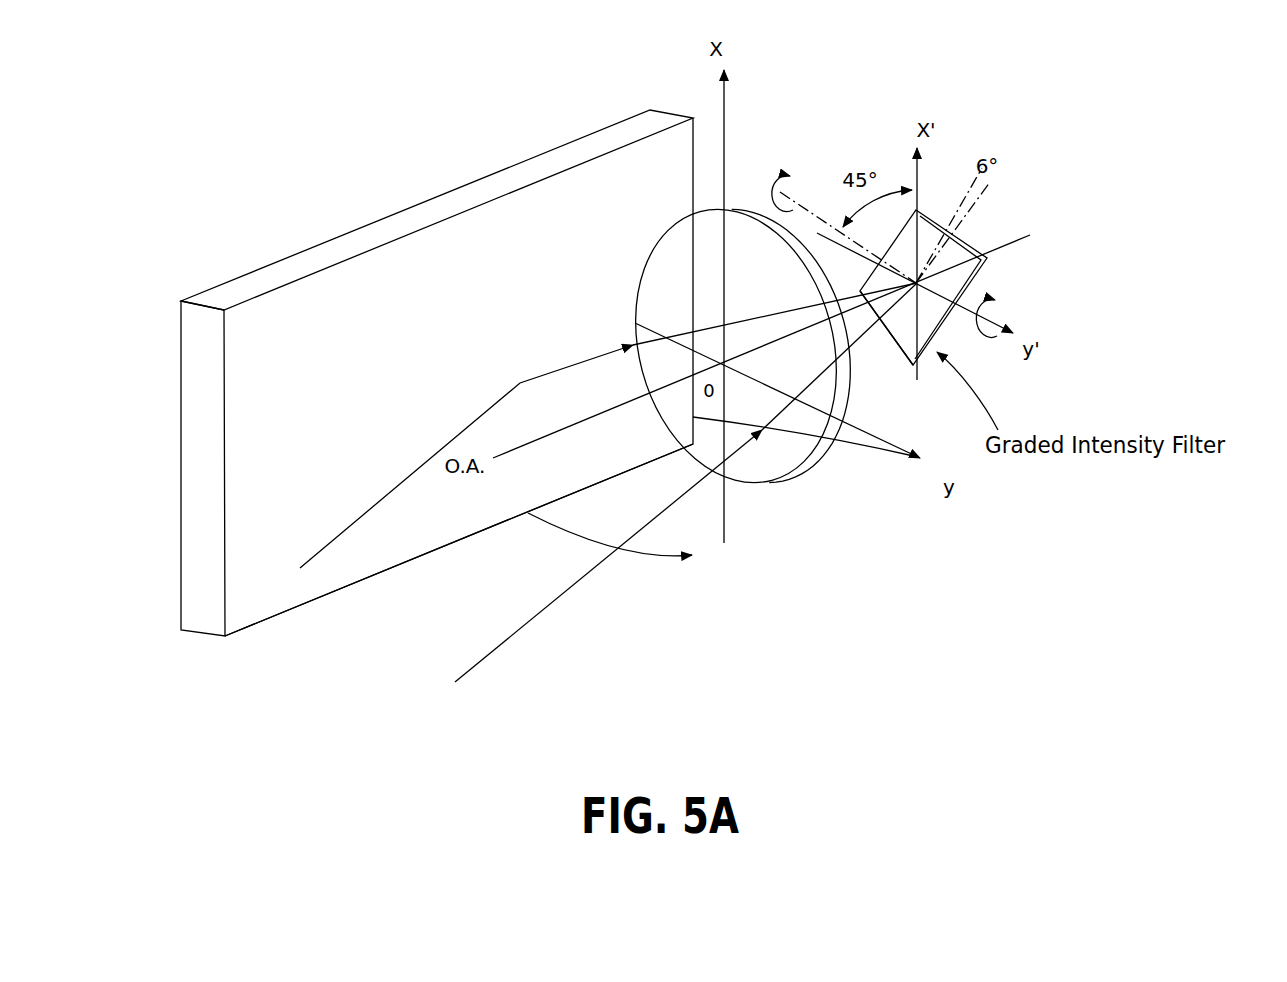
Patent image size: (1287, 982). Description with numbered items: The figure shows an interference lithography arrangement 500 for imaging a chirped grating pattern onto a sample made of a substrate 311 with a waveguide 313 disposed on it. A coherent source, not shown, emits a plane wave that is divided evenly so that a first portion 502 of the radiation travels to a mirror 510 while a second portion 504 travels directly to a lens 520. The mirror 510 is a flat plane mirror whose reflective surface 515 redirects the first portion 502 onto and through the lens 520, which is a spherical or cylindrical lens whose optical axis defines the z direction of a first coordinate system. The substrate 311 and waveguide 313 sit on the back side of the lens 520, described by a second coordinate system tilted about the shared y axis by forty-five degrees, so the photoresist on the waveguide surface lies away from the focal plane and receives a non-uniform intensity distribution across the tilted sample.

The IL arrangement 500 is at (276, 79).
The mirror 510 is at (223, 272).
The reflective surface 515 is at (258, 595).
The lens 520 is at (740, 205).
The first portion of the radiation 502 is at (357, 527).
The second portion of radiation 504 is at (524, 625).
The substrate 311 is at (901, 345).
The waveguide 313 is at (973, 240).